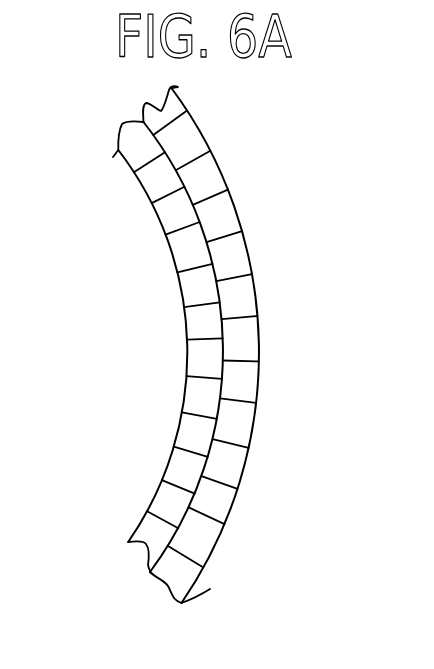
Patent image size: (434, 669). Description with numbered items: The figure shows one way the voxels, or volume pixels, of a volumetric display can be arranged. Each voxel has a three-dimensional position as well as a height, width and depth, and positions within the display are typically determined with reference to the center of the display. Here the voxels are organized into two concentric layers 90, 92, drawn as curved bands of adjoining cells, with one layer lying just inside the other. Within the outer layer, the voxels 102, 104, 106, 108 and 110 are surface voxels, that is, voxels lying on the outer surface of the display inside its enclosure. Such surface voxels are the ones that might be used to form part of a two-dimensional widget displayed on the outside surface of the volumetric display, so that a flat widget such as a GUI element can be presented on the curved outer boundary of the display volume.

The concentric layer 90 is at (130, 542).
The concentric layer 92 is at (168, 590).
The voxel 102 is at (202, 183).
The voxel 104 is at (232, 214).
The voxel 106 is at (244, 257).
The voxel 108 is at (255, 300).
The voxel 110 is at (243, 345).